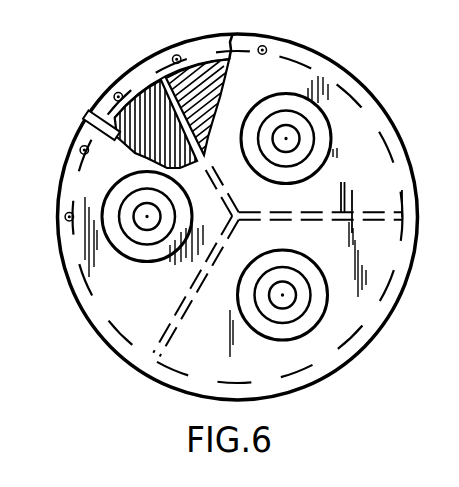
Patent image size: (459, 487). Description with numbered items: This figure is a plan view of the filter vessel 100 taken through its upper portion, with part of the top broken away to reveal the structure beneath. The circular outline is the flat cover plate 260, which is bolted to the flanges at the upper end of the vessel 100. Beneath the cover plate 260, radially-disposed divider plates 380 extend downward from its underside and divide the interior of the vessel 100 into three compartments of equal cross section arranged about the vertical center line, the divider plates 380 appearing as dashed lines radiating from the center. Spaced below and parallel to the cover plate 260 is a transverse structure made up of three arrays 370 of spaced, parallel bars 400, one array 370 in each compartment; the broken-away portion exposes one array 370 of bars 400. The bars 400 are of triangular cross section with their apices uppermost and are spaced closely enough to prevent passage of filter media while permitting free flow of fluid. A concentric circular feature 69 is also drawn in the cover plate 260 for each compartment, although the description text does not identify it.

The vessel 100 is at (238, 217).
The bore 69 is at (280, 137).
The cover plate 260 is at (372, 143).
The arrays of spaced, parallel bars 370 is at (146, 84).
The divider plates 380 is at (195, 70).
The bars 400 is at (94, 112).